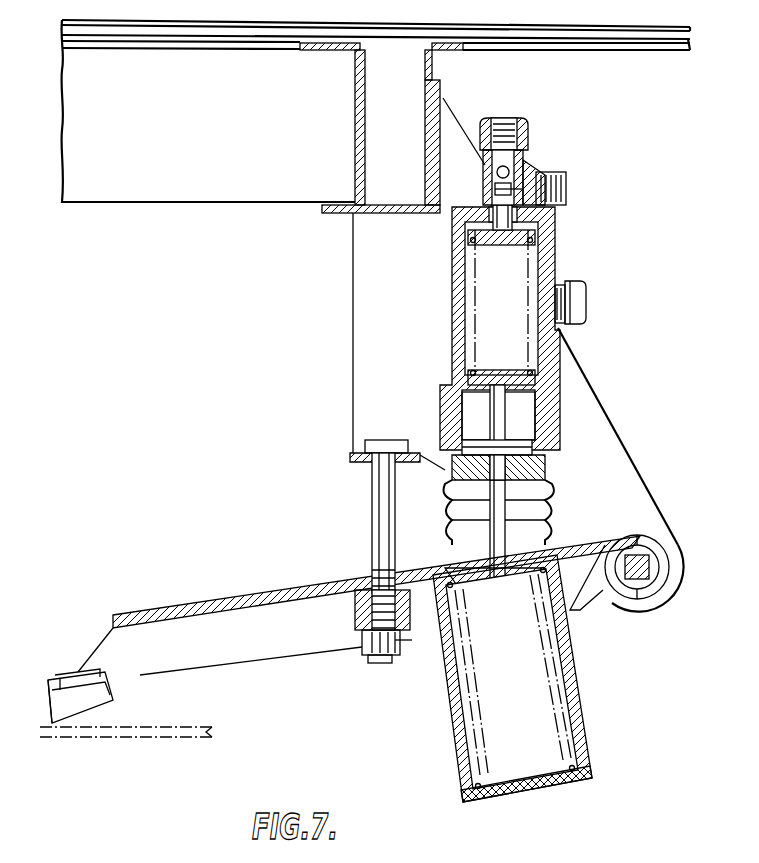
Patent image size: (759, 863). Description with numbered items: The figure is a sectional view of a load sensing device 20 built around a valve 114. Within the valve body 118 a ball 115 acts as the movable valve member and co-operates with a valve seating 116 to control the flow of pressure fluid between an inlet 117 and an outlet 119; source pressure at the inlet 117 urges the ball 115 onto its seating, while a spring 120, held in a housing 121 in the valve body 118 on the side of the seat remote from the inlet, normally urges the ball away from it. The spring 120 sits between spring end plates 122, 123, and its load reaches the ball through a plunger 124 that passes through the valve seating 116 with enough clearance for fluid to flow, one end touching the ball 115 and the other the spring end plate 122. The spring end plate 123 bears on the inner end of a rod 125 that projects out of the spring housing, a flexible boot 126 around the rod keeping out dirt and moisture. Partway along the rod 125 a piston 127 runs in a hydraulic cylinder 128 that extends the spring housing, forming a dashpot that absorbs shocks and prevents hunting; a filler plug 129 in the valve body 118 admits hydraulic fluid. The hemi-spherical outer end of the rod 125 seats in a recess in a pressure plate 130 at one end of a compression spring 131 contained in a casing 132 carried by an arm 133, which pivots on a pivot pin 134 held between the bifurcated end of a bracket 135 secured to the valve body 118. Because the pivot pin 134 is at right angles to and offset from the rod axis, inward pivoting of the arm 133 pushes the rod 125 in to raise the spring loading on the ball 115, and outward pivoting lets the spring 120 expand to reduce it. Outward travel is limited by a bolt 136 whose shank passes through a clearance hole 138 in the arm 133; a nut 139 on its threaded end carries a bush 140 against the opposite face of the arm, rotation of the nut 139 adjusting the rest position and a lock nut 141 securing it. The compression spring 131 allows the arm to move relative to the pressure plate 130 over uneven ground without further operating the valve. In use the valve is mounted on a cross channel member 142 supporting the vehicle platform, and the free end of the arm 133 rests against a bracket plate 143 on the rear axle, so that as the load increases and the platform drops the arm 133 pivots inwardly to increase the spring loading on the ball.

The load sensing device 20 is at (592, 364).
The valve 114 is at (511, 328).
The ball 115 is at (510, 170).
The valve seating 116 is at (523, 183).
The inlet 117 is at (500, 118).
The valve body 118 is at (456, 286).
The outlet 119 is at (567, 190).
The spring 120 is at (476, 318).
The housing 121 is at (472, 356).
The spring end plate 122 is at (470, 232).
The spring end plate 123 is at (465, 380).
The plunger 124 is at (515, 194).
The rod 125 is at (507, 422).
The flexible boot 126 is at (460, 532).
The piston 127 is at (516, 470).
The hydraulic cylinder 128 is at (532, 410).
The filler plug 129 is at (582, 300).
The pressure plate 130 is at (496, 598).
The compression spring 131 is at (558, 702).
The casing 132 is at (588, 777).
The arm 133 is at (243, 601).
The pivot pin 134 is at (637, 600).
The bracket 135 is at (625, 470).
The bolt 136 is at (386, 494).
The clearance hole 138 is at (374, 572).
The nut 139 is at (405, 642).
The bush 140 is at (356, 617).
The lock nut 141 is at (370, 655).
The cross channel member 142 is at (356, 182).
The bracket plate 143 is at (160, 737).